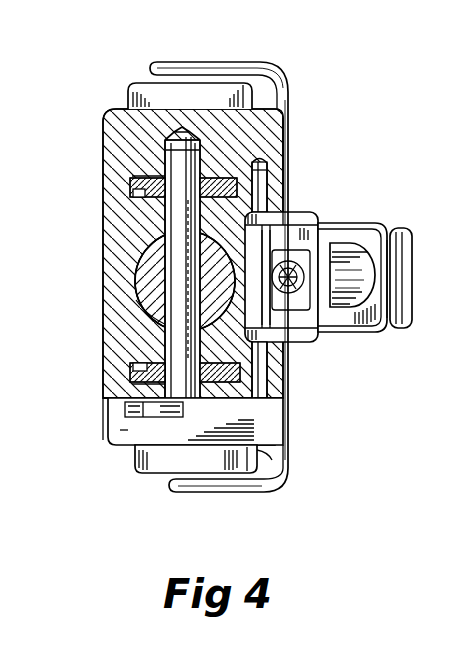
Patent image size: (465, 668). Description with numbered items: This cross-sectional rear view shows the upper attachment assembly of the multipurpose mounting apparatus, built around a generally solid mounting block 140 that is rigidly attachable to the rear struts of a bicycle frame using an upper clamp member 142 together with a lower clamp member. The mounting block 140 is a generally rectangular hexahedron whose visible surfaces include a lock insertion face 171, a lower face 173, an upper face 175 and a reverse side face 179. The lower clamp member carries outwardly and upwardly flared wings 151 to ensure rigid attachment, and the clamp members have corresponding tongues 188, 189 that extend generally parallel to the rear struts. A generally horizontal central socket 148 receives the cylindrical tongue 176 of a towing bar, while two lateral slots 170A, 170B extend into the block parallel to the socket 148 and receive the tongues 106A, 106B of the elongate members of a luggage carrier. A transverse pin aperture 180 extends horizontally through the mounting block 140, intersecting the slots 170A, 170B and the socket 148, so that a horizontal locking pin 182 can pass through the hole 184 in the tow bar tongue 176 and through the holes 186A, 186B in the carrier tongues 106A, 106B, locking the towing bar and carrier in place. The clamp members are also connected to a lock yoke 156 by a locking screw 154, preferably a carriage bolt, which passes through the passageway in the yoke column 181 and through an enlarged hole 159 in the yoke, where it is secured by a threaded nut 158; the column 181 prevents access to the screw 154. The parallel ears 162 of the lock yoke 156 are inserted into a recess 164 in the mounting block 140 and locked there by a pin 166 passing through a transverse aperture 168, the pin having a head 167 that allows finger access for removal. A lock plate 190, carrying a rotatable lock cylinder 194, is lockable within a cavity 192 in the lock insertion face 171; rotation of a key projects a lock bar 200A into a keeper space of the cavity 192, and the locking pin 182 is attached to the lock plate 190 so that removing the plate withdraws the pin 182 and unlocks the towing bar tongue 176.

The mounting block 140 is at (97, 119).
The upper clamp member 142 is at (148, 83).
The central socket 148 is at (136, 266).
The wings 151 is at (178, 62).
The locking screw 154 is at (282, 262).
The lock yoke 156 is at (386, 193).
The threaded nut 158 is at (302, 270).
The enlarged hole 159 is at (298, 270).
The ears 162 is at (320, 212).
The recess 164 is at (289, 212).
The pin 166 is at (284, 132).
The head 167 is at (258, 412).
The transverse aperture 168 is at (263, 163).
The slot 170A is at (150, 368).
The slot 170B is at (143, 197).
The lock insertion face 171 is at (122, 432).
The lower face 173 is at (286, 129).
The upper face 175 is at (103, 335).
The cylindrical tongue 176 is at (134, 296).
The reverse side face 179 is at (178, 109).
The transverse pin aperture 180 is at (166, 158).
The yoke column 181 is at (363, 225).
The horizontal pin 182 is at (168, 156).
The hole 184 is at (172, 286).
The hole 186A is at (168, 186).
The hole 186B is at (174, 385).
The tongue 188 is at (396, 244).
The tongue 189 is at (410, 292).
The lock plate 190 is at (134, 437).
The cavity 192 is at (112, 440).
The rotatable lock cylinder 194 is at (259, 450).
The tongue 106A is at (136, 373).
The tongue 106B is at (130, 190).
The lock bar 200A is at (128, 412).